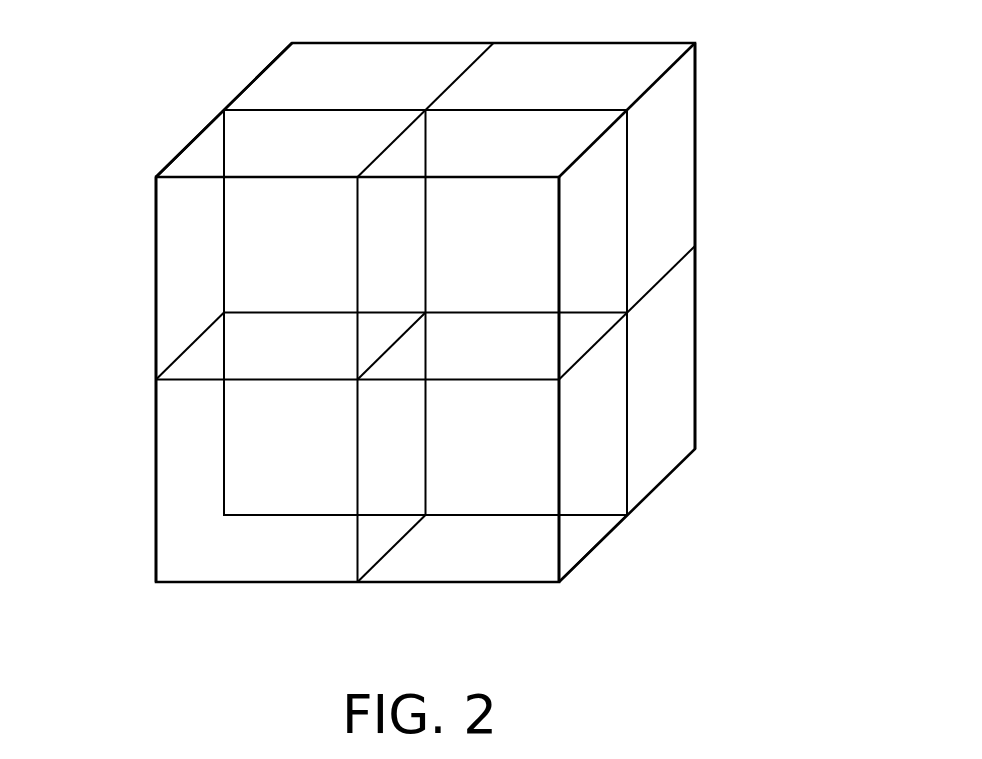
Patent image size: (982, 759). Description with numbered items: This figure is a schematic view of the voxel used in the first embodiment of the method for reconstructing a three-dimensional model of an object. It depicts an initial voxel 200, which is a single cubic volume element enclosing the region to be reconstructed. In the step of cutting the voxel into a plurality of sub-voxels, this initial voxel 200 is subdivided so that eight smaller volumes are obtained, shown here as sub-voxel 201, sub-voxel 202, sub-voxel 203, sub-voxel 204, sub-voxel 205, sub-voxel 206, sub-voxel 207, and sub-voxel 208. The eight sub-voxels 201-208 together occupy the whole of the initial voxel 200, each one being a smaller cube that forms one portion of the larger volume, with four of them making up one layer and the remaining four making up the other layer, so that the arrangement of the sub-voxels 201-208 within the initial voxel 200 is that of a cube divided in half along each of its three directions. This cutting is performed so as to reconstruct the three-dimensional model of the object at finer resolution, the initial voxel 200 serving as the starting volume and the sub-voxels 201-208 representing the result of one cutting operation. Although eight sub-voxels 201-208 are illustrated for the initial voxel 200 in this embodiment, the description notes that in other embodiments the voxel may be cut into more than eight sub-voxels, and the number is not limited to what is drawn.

The initial voxel 200 is at (723, 649).
The sub-voxel 201 is at (156, 247).
The sub-voxel 202 is at (153, 508).
The sub-voxel 203 is at (560, 259).
The sub-voxel 204 is at (559, 471).
The sub-voxel 205 is at (257, 75).
The sub-voxel 206 is at (223, 412).
The sub-voxel 207 is at (695, 142).
The sub-voxel 208 is at (695, 353).